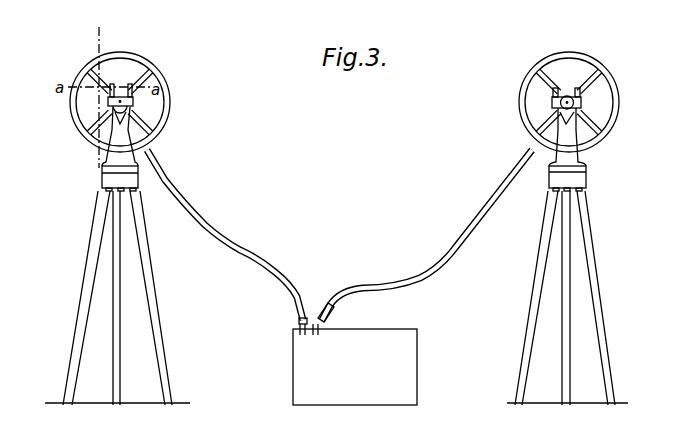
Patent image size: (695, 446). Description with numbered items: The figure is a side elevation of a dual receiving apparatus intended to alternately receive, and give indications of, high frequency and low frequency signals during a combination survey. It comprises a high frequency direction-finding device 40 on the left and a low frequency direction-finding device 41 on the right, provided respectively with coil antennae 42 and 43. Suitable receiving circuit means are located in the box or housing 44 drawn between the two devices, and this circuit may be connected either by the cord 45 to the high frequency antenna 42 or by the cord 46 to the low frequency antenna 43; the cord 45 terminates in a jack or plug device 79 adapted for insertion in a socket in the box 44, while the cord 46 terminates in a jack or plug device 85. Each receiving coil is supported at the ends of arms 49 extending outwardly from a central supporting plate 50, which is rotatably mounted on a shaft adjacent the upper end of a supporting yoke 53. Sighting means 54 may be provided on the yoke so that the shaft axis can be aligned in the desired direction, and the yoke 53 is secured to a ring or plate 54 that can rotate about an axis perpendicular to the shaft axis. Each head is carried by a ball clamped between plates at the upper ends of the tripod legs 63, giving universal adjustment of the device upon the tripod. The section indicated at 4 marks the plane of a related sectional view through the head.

The section line 4- 4 is at (113, 35).
The high frequency direction-finding device 40 is at (123, 106).
The low frequency direction-finding device 41 is at (569, 249).
The coil antenna 42 is at (166, 125).
The coil antenna 43 is at (619, 95).
The box or housing 44 is at (402, 345).
The cord 45 is at (258, 268).
The cord 46 is at (473, 221).
The arms 49 is at (94, 86).
The central supporting plate 50 is at (137, 83).
The supporting yoke 53 is at (120, 135).
The sighting means / ring or plate 54 is at (117, 97).
The tripod legs 63 is at (138, 215).
The jack or plug device 79 is at (297, 322).
The jack or plug device 85 is at (339, 294).